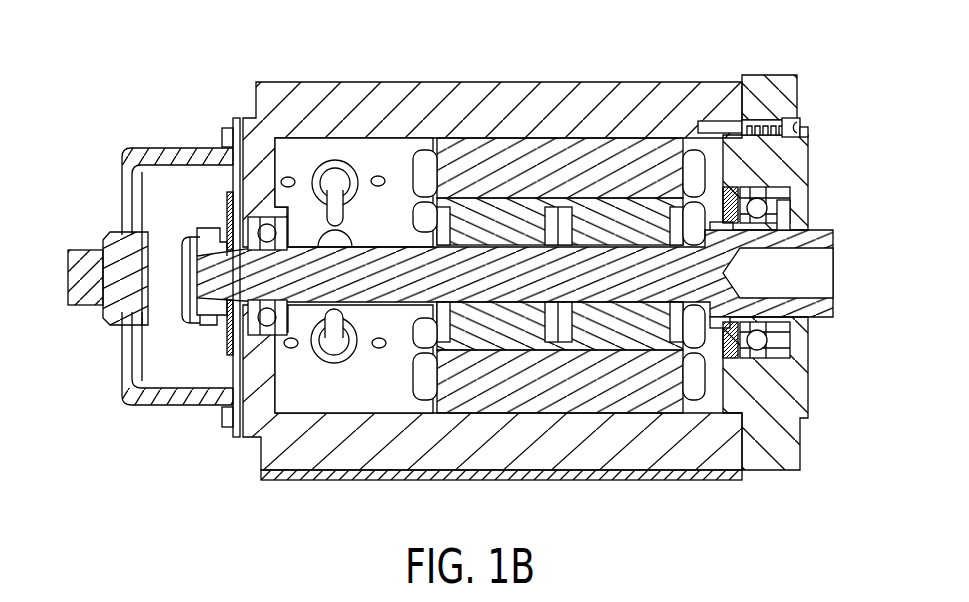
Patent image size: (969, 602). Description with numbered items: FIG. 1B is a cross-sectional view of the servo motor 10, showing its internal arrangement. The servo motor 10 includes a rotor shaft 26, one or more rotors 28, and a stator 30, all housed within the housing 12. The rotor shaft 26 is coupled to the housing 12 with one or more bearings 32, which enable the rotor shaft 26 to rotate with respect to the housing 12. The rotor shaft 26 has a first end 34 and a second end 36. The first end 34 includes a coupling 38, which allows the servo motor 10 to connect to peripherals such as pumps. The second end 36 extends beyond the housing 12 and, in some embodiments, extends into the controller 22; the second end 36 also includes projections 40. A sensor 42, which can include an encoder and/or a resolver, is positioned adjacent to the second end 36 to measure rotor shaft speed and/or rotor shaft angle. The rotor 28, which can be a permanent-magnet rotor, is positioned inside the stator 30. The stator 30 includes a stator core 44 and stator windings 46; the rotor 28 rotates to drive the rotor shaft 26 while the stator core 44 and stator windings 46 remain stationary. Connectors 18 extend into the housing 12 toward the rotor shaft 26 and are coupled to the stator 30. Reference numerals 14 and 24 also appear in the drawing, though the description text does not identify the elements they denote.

The servo motor 10 is at (463, 277).
The housing 12 is at (780, 88).
The housing 14 is at (428, 103).
The connectors 18 is at (346, 190).
The controller 22 is at (145, 274).
The nut 24 is at (86, 298).
The rotor shaft 26 is at (650, 290).
The rotor 28 is at (595, 338).
The stator 30 is at (559, 278).
The bearings 32 is at (258, 322).
The first end 34 is at (796, 258).
The second end 36 is at (192, 306).
The coupling 38 is at (820, 277).
The projections 40 is at (188, 236).
The sensor 42 is at (210, 227).
The stator core 44 is at (690, 165).
The stator windings 46 is at (513, 150).